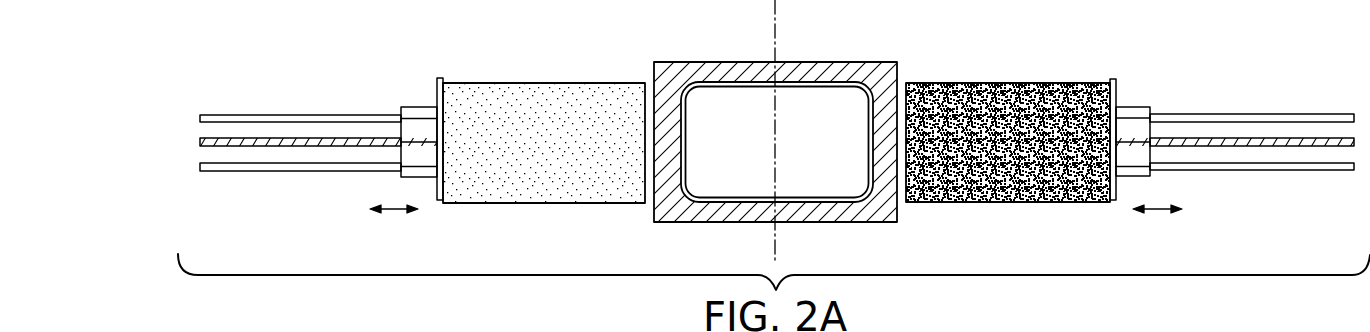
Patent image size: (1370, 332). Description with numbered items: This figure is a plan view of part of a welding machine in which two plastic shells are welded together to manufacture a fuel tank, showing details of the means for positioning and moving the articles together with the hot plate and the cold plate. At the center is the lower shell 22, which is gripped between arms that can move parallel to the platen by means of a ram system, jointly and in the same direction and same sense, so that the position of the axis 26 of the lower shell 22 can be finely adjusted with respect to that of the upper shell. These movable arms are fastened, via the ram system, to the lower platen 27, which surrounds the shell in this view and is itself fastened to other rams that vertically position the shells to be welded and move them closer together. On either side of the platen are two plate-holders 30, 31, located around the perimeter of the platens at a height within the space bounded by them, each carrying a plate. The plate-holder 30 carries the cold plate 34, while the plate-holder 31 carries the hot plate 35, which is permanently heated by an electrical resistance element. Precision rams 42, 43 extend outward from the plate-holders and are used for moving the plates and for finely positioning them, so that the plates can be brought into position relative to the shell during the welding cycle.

The lower shell 22 is at (827, 200).
The axis of the lower shell 26 is at (773, 143).
The lower platen 27 is at (867, 68).
The plate-holder 30 is at (425, 110).
The plate-holder 31 is at (1130, 110).
The cold plate 34 is at (622, 85).
The hot plate 35 is at (970, 88).
The precision ram 42 is at (283, 140).
The precision ram 43 is at (1237, 140).